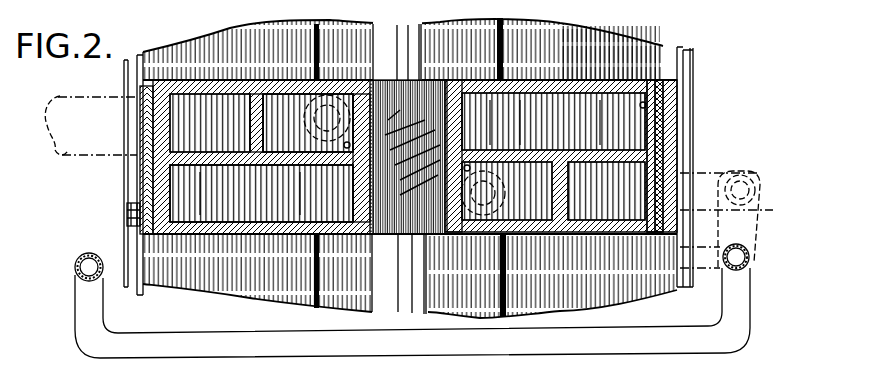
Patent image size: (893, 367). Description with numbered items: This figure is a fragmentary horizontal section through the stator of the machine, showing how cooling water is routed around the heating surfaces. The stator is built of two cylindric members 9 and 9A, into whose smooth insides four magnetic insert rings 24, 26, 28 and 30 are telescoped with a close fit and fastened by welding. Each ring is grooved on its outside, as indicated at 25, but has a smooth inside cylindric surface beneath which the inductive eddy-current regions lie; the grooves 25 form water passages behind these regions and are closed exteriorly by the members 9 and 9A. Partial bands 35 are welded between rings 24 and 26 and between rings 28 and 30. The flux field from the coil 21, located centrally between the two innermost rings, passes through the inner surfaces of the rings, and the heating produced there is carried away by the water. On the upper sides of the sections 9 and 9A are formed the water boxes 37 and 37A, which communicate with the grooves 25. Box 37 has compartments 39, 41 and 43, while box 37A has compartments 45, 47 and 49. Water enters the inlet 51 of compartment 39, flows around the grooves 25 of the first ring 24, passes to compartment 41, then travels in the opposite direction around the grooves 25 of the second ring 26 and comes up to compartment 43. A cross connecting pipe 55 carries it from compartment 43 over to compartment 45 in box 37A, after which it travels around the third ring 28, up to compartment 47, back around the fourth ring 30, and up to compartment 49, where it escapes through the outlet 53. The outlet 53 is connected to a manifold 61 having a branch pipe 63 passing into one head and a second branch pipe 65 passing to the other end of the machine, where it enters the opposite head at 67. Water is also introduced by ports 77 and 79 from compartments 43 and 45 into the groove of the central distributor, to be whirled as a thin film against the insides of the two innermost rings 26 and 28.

The member 9 is at (368, 293).
The member 9A is at (458, 292).
The coil 21 is at (410, 171).
The magnetic insert ring 24 is at (190, 62).
The grooves 25 is at (215, 142).
The magnetic insert ring 26 is at (313, 26).
The magnetic insert ring 28 is at (510, 37).
The magnetic insert ring 30 is at (622, 304).
The partial bands 35 is at (587, 113).
The water box 37 is at (407, 160).
The water box 37A is at (472, 176).
The compartment 39 is at (220, 113).
The compartment 41 is at (207, 210).
The compartment 43 is at (287, 100).
The compartment 45 is at (516, 208).
The compartment 47 is at (613, 120).
The compartment 49 is at (613, 197).
The water inlet 51 is at (90, 93).
The water outlet 53 is at (707, 165).
The cross connecting pipe 55 is at (373, 226).
The manifold 61 is at (758, 209).
The branch pipe 63 is at (700, 270).
The branch pipe 65 is at (87, 298).
The inlet 67 is at (122, 258).
The port 77 is at (356, 95).
The port 79 is at (478, 120).